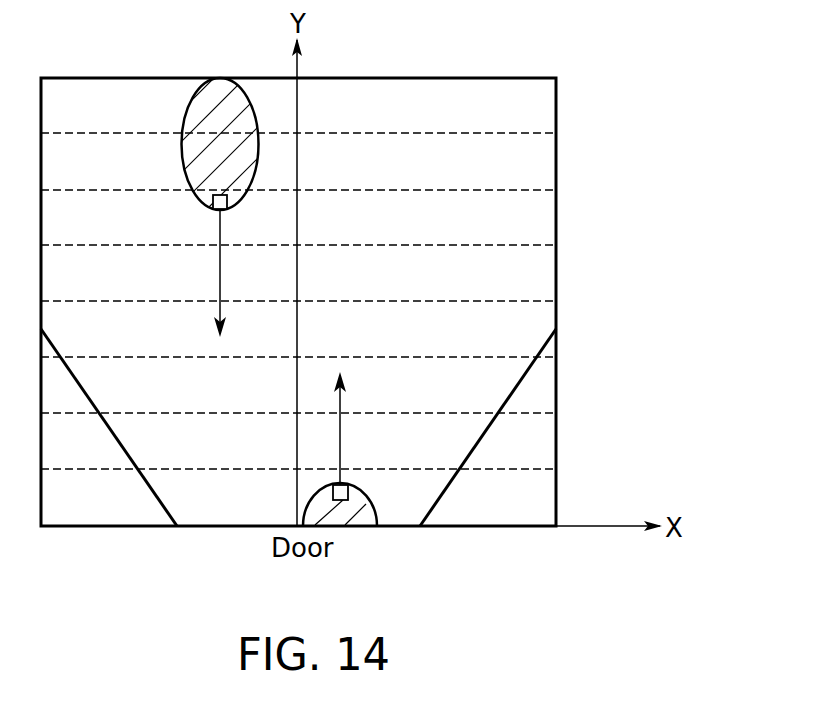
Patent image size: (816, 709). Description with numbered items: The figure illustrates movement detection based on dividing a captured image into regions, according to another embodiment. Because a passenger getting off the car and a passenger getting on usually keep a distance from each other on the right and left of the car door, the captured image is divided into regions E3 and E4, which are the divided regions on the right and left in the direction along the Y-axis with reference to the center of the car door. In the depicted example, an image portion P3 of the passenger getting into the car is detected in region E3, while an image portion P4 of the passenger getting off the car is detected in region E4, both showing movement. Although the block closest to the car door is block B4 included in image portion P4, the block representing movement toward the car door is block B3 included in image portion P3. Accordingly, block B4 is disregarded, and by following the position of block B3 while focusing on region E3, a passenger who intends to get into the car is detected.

The region E3 is at (133, 77).
The region E4 is at (421, 77).
The image portion P3 is at (190, 121).
The block B3 is at (213, 206).
The image portion P4 is at (340, 520).
The block B4 is at (350, 484).